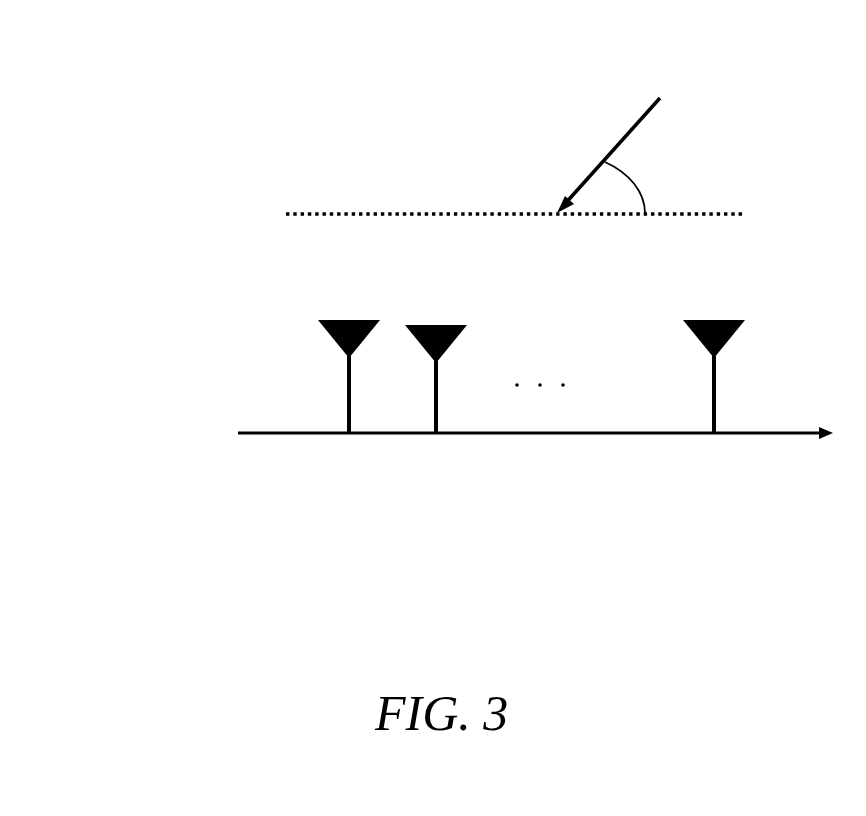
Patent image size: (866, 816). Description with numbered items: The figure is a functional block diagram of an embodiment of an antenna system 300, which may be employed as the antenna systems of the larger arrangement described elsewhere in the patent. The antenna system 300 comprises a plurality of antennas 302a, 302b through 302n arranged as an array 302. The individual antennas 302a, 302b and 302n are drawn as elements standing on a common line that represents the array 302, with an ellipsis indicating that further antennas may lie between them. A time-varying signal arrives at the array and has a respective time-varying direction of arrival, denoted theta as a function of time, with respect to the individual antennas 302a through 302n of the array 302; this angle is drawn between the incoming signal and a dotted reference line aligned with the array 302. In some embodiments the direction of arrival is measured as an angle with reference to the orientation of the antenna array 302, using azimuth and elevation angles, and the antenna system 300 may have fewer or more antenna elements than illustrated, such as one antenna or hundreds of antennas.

The antenna system 300 is at (226, 135).
The antenna array 302 is at (168, 335).
The antenna 302a is at (338, 312).
The antenna 302b is at (437, 318).
The antenna 302n is at (718, 313).